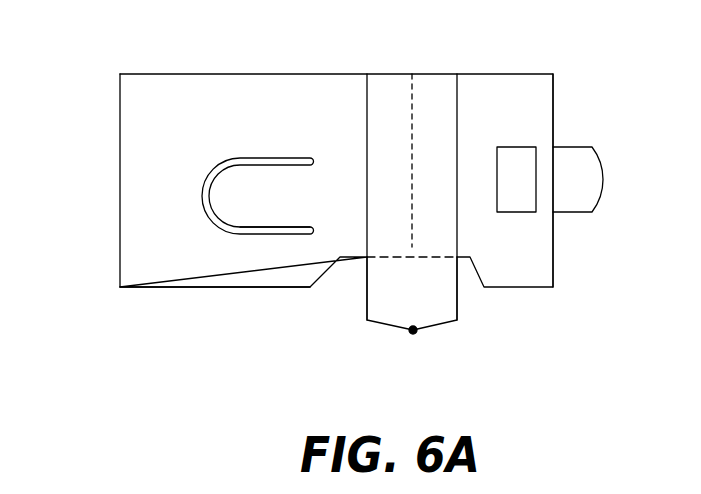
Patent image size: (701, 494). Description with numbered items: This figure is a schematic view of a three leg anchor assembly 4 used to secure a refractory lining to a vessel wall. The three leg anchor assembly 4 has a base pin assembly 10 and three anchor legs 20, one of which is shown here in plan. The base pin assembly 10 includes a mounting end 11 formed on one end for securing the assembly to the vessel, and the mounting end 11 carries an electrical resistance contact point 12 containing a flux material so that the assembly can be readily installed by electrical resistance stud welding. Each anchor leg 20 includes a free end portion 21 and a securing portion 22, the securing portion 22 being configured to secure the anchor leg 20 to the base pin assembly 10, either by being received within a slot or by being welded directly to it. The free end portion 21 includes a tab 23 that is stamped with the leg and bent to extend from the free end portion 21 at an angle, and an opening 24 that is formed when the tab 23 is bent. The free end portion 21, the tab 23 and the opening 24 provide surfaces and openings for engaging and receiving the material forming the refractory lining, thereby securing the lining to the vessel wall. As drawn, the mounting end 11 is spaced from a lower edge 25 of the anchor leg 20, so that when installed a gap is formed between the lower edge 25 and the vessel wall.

The three leg anchor assembly 4 is at (289, 58).
The base pin assembly 10 is at (489, 305).
The mounting end 11 is at (441, 310).
The electrical resistance contact point 12 is at (413, 335).
The anchor leg 20 is at (631, 92).
The free end portion 21 is at (137, 162).
The securing portion 22 is at (471, 100).
The tab 23 is at (595, 178).
The opening 24 is at (517, 160).
The lower edge 25 is at (141, 288).